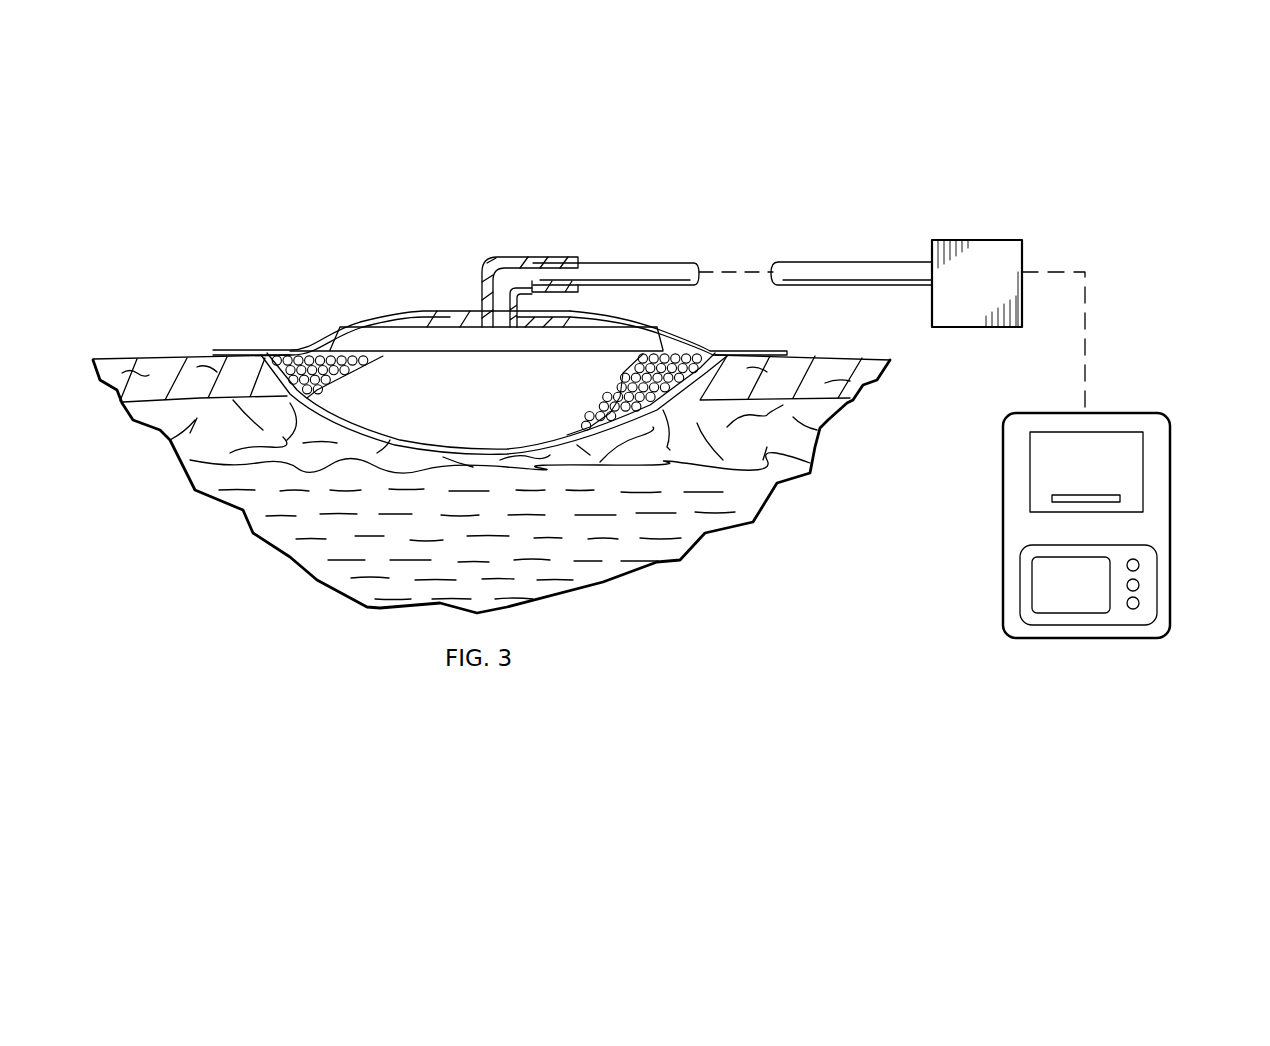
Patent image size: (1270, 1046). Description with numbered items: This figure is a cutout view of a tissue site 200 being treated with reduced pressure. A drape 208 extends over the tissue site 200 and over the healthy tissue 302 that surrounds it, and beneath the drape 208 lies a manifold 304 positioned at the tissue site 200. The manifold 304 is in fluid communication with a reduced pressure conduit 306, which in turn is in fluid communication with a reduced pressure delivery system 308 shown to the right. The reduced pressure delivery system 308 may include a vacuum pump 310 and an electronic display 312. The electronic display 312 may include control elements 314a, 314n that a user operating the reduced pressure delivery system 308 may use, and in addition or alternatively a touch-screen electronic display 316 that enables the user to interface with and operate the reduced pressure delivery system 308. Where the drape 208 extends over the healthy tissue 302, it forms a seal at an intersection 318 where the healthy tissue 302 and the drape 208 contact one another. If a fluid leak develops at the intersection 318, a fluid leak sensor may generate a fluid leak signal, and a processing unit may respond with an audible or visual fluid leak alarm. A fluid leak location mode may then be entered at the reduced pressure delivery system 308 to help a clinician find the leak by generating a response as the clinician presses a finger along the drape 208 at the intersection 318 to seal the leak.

The tissue site 200 is at (288, 152).
The drape 208 is at (250, 350).
The healthy tissue 302 is at (882, 378).
The manifold 304 is at (482, 340).
The reduced pressure conduit 306 is at (685, 262).
The reduced pressure delivery system 308 is at (1097, 524).
The vacuum pump 310 is at (1118, 432).
The electronic display 312 is at (1095, 615).
The control element 314a is at (1140, 565).
The control element 314n is at (1140, 605).
The touch-screen electronic display 316 is at (1070, 614).
The intersection 318 is at (210, 352).